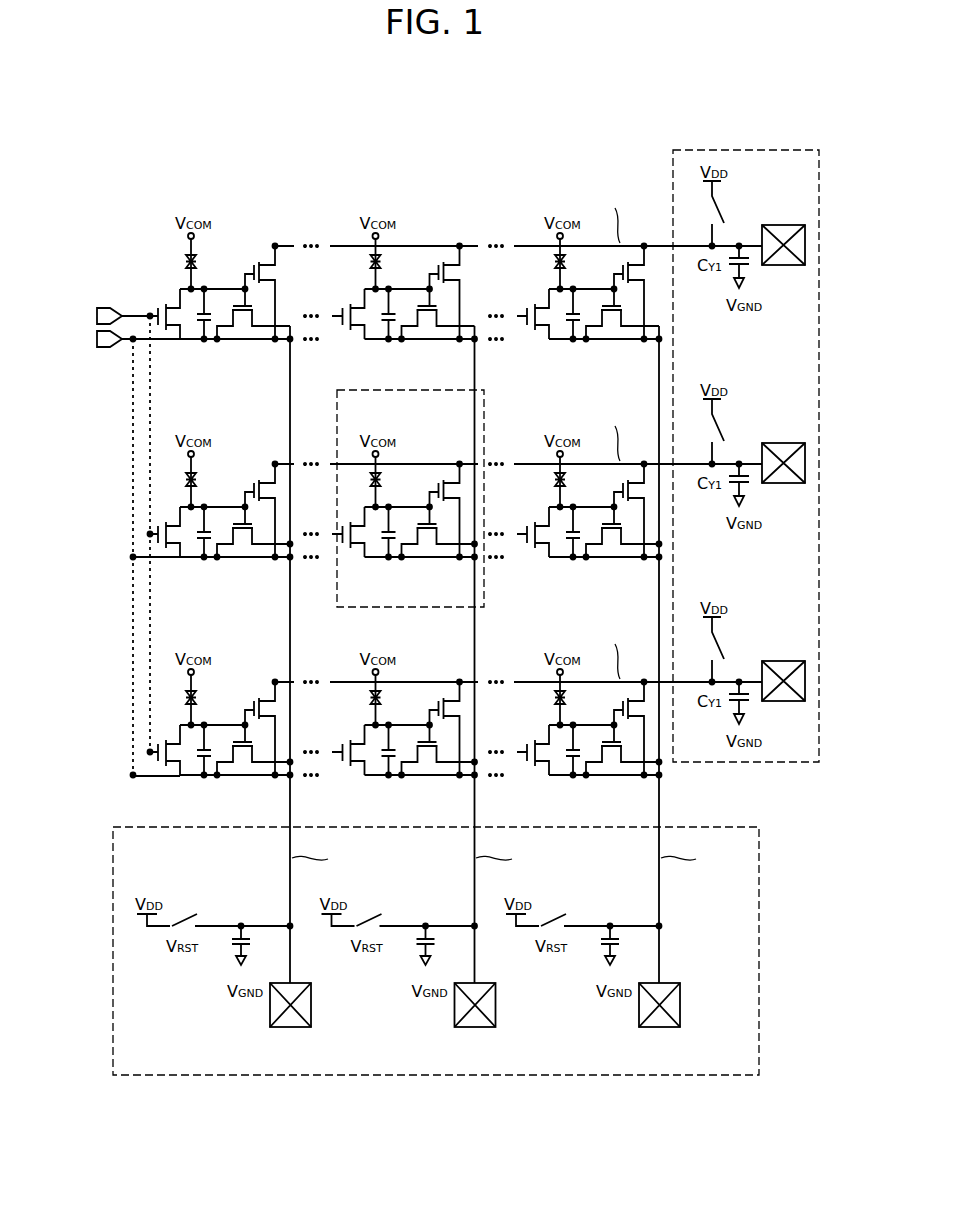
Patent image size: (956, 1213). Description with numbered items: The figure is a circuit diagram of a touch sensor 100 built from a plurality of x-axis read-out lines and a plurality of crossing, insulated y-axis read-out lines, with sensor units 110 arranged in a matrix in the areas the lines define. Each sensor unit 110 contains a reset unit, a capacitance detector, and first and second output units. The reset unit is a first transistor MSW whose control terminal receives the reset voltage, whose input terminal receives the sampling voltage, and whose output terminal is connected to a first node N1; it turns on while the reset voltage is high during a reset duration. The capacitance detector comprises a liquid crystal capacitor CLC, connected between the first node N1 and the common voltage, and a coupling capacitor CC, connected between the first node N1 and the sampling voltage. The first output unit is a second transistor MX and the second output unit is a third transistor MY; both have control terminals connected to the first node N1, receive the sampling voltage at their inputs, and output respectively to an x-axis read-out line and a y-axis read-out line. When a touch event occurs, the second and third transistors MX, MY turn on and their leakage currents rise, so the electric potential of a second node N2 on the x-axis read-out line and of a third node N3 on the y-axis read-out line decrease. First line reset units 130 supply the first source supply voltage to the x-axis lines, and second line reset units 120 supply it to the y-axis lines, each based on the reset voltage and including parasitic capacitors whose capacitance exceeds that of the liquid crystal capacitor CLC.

The touch sensor 100 is at (133, 210).
The sensor unit 110 is at (484, 392).
The second line reset unit 120 is at (746, 150).
The first line reset unit 130 is at (762, 860).
The first node N1 is at (388, 504).
The second node N2 is at (292, 929).
The third node N3 is at (739, 243).
The first transistor MSW is at (362, 532).
The second transistor MX is at (438, 533).
The third transistor MY is at (456, 490).
The liquid crystal capacitor CLC is at (367, 517).
The coupling capacitor CC is at (404, 521).